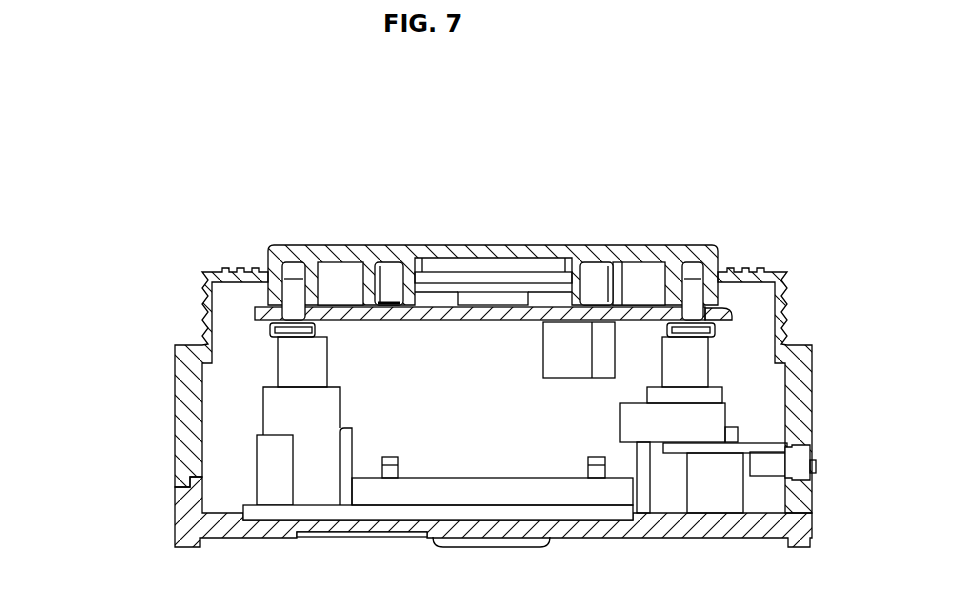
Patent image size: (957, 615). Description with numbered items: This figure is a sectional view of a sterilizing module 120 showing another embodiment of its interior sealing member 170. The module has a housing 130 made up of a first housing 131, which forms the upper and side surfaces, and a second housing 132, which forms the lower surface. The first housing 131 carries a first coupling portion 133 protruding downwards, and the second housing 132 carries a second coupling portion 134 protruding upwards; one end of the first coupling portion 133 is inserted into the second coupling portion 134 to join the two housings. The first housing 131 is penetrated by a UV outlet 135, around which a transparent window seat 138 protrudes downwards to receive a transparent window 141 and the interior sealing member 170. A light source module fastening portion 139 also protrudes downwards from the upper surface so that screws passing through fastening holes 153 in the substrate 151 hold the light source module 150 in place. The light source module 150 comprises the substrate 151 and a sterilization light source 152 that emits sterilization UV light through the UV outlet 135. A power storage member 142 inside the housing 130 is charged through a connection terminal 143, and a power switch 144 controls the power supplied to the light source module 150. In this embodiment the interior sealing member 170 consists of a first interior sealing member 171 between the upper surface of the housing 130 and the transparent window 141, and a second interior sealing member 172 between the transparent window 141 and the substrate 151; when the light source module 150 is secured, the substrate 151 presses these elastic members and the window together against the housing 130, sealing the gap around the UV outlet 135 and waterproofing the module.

The sterilizing module 120 is at (156, 78).
The housing 130 is at (100, 470).
The first housing 131 is at (182, 468).
The second housing 132 is at (182, 510).
The first coupling portion 133 is at (287, 367).
The second coupling portion 134 is at (275, 412).
The UV outlet 135 is at (499, 260).
The transparent window seat 138 is at (358, 258).
The light source module fastening portion 139 is at (310, 258).
The transparent window 141 is at (543, 283).
The power storage member 142 is at (575, 492).
The connection terminal 143 is at (770, 460).
The power switch 144 is at (492, 546).
The light source module 150 is at (657, 196).
The substrate 151 is at (643, 310).
The sterilization light source 152 is at (521, 300).
The fastening holes 153 is at (728, 308).
The interior sealing member 170 is at (452, 146).
The first interior sealing member 171 is at (387, 262).
The second interior sealing member 172 is at (398, 301).